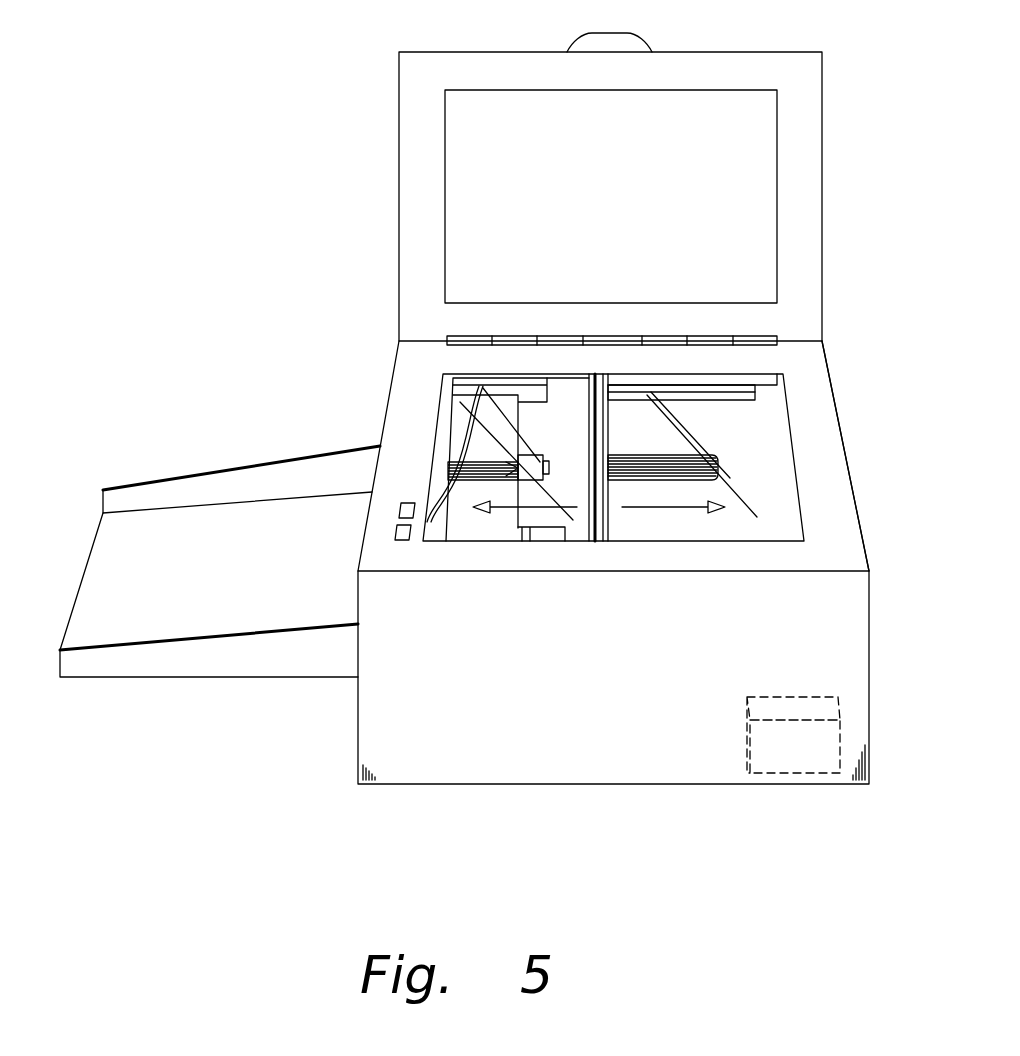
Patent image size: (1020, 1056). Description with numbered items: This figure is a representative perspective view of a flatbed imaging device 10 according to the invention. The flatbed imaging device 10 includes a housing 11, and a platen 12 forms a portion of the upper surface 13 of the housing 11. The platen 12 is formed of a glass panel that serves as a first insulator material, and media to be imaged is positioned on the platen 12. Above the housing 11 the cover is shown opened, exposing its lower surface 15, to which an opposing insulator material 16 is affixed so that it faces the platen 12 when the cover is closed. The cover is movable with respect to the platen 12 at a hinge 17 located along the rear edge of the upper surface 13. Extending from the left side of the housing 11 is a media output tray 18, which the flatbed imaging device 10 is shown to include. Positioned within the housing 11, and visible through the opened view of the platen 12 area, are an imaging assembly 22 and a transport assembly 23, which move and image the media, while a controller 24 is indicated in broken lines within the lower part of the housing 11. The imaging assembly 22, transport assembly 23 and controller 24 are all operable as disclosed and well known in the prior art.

The flatbed imaging device 10 is at (491, 438).
The housing 11 is at (862, 655).
The platen 12 is at (773, 430).
The upper surface 13 is at (820, 377).
The lower surface 15 is at (822, 186).
The opposing insulator material 16 is at (751, 291).
The hinge 17 is at (457, 345).
The media output tray 18 is at (245, 464).
The imaging assembly 22 is at (558, 450).
The transport assembly 23 is at (708, 388).
The controller 24 is at (803, 768).